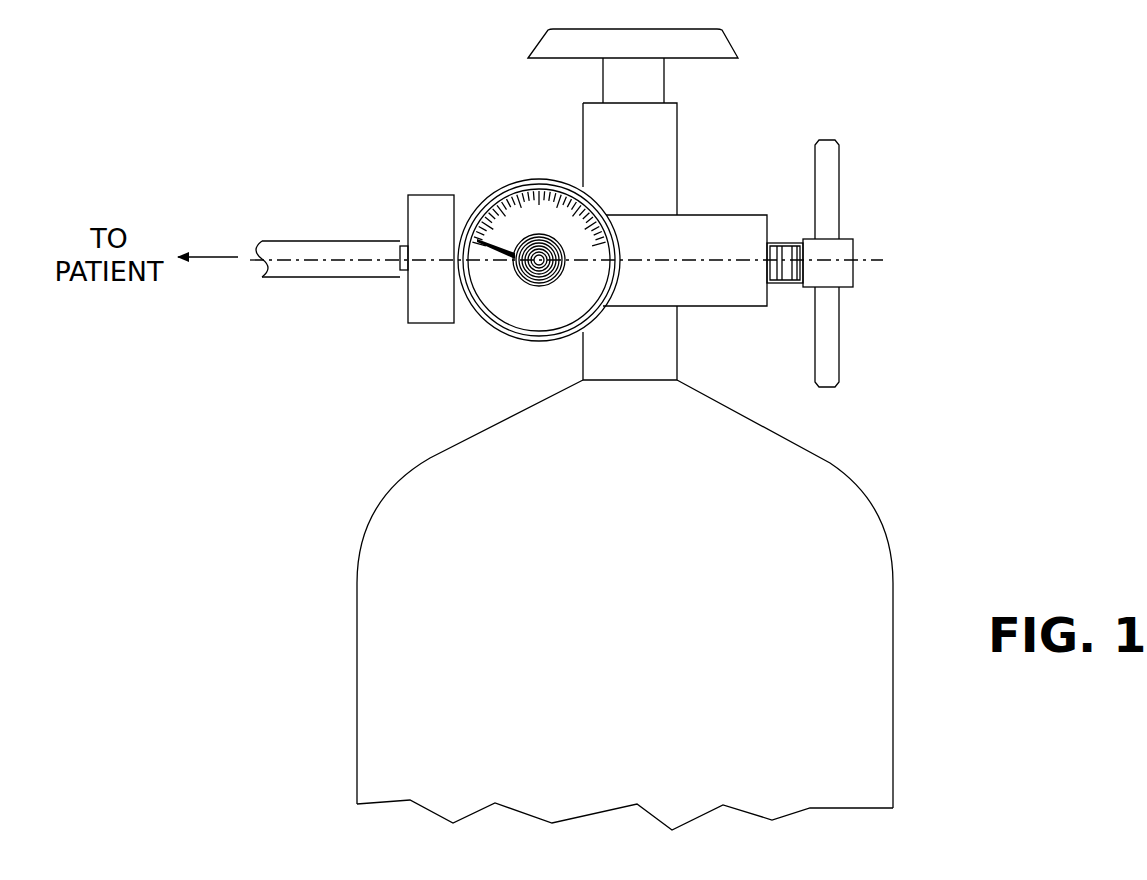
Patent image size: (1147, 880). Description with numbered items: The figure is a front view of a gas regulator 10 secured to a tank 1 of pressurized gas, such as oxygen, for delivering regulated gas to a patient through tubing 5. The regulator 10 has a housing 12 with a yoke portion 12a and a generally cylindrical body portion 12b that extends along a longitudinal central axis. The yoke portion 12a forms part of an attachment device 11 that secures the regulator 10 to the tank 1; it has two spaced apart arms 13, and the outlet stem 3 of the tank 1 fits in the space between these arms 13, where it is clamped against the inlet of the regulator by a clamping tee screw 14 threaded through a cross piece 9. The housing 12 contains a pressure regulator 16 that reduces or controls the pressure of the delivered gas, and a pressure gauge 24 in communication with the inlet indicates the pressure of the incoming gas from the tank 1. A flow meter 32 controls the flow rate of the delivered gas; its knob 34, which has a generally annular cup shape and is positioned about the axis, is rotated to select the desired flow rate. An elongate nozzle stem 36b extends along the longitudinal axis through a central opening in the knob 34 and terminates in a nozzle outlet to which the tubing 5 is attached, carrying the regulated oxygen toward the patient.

The tank 1 is at (372, 682).
The outlet stem 3 is at (667, 132).
The tubing 5 is at (307, 267).
The cross piece 9 is at (767, 293).
The gas regulator 10 is at (522, 234).
The attachment device 11 is at (722, 193).
The housing 12 is at (522, 278).
The yoke portion 12a is at (708, 232).
The body portion 12b is at (477, 197).
The arms 13 is at (695, 293).
The clamping tee screw 14 is at (832, 192).
The pressure regulator 16 is at (527, 281).
The pressure gauge 24 is at (541, 330).
The flow meter 32 is at (379, 300).
The knob 34 is at (431, 310).
The nozzle stem 36b is at (405, 242).